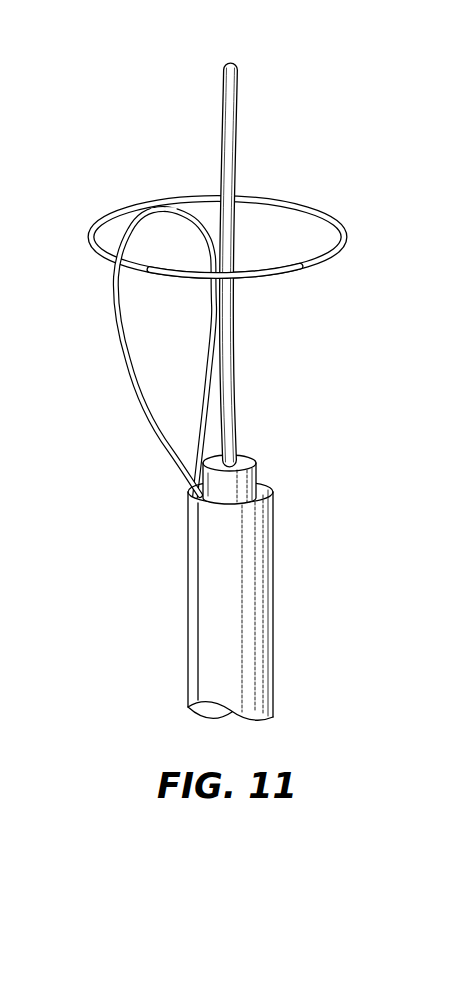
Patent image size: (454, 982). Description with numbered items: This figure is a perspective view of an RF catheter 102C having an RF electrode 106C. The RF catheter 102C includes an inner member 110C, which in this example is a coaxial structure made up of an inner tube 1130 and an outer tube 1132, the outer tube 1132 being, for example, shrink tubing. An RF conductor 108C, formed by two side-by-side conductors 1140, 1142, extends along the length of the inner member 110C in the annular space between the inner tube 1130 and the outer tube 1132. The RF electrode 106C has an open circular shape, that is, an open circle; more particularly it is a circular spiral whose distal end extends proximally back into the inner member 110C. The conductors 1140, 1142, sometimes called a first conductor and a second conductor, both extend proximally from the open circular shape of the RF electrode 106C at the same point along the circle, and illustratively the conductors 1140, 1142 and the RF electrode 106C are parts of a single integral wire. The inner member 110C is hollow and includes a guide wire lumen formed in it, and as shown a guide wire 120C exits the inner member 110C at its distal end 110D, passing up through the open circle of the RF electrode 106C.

The RF catheter 102C is at (218, 394).
The RF electrode 106C is at (335, 220).
The RF conductor 108C is at (108, 356).
The inner member 110C is at (233, 544).
The distal end 110D is at (202, 517).
The guide wire 120C is at (237, 150).
The inner tube 1130 is at (257, 472).
The outer tube 1132 is at (261, 532).
The first conductor 1140 is at (150, 408).
The second conductor 1142 is at (193, 408).